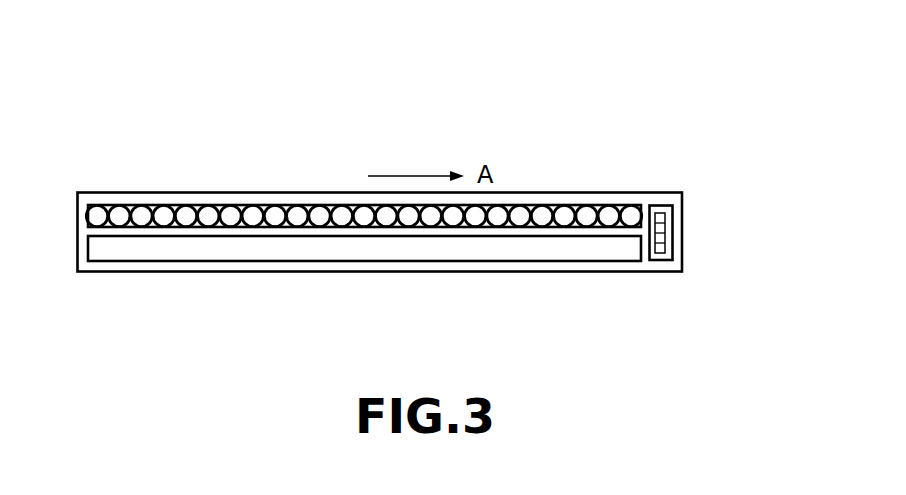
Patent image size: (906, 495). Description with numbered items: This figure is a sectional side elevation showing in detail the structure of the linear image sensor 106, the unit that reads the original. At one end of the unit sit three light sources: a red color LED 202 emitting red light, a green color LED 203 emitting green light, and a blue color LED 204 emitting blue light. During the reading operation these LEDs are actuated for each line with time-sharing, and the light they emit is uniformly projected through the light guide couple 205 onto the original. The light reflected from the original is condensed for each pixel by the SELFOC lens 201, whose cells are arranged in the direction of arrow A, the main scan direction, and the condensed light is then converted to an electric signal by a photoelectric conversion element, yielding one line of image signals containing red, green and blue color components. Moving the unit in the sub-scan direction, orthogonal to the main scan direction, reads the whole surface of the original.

The linear image sensor 106 is at (399, 85).
The SELFOC lens 201 is at (301, 220).
The red color LED 202 is at (657, 217).
The green color LED 203 is at (658, 237).
The blue color LED 204 is at (658, 247).
The light guide couple 205 is at (322, 252).